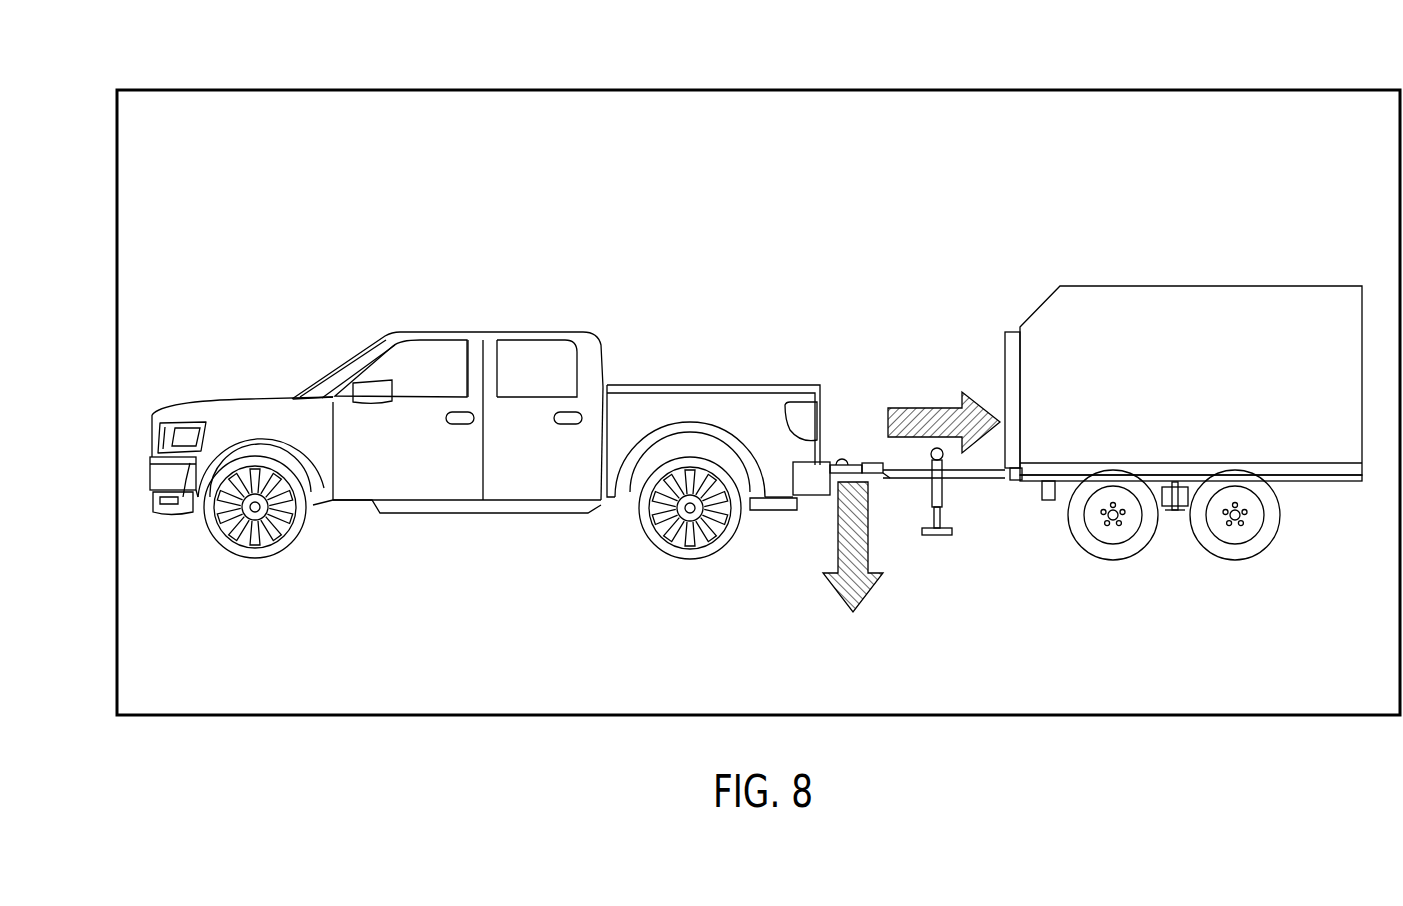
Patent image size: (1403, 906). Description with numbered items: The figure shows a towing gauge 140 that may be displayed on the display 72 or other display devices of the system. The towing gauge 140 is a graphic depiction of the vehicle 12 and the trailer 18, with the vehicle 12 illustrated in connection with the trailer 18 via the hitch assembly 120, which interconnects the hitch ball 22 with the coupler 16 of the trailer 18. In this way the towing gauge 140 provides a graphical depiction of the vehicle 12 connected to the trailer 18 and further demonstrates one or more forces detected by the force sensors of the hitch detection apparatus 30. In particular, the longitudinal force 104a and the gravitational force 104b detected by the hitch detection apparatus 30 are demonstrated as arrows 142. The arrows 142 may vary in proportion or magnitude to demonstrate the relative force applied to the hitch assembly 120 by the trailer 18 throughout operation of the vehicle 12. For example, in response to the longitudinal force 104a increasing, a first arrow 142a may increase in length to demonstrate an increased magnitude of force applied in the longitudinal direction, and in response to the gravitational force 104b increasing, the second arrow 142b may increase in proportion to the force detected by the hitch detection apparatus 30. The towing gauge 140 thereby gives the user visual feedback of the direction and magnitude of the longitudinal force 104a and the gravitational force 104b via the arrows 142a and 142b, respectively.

The display 72 is at (191, 89).
The towing gauge 140 is at (140, 170).
The vehicle 12 is at (532, 433).
The trailer 18 is at (1122, 397).
The hitch detection apparatus 30 is at (809, 513).
The hitch assembly 120 is at (847, 433).
The hitch ball 22 is at (872, 462).
The coupler 16 is at (883, 480).
The longitudinal force 104a is at (1025, 341).
The first arrow 142a is at (930, 410).
The gravitational force 104b is at (763, 551).
The second arrow 142b is at (838, 550).
The arrows 142 is at (763, 582).